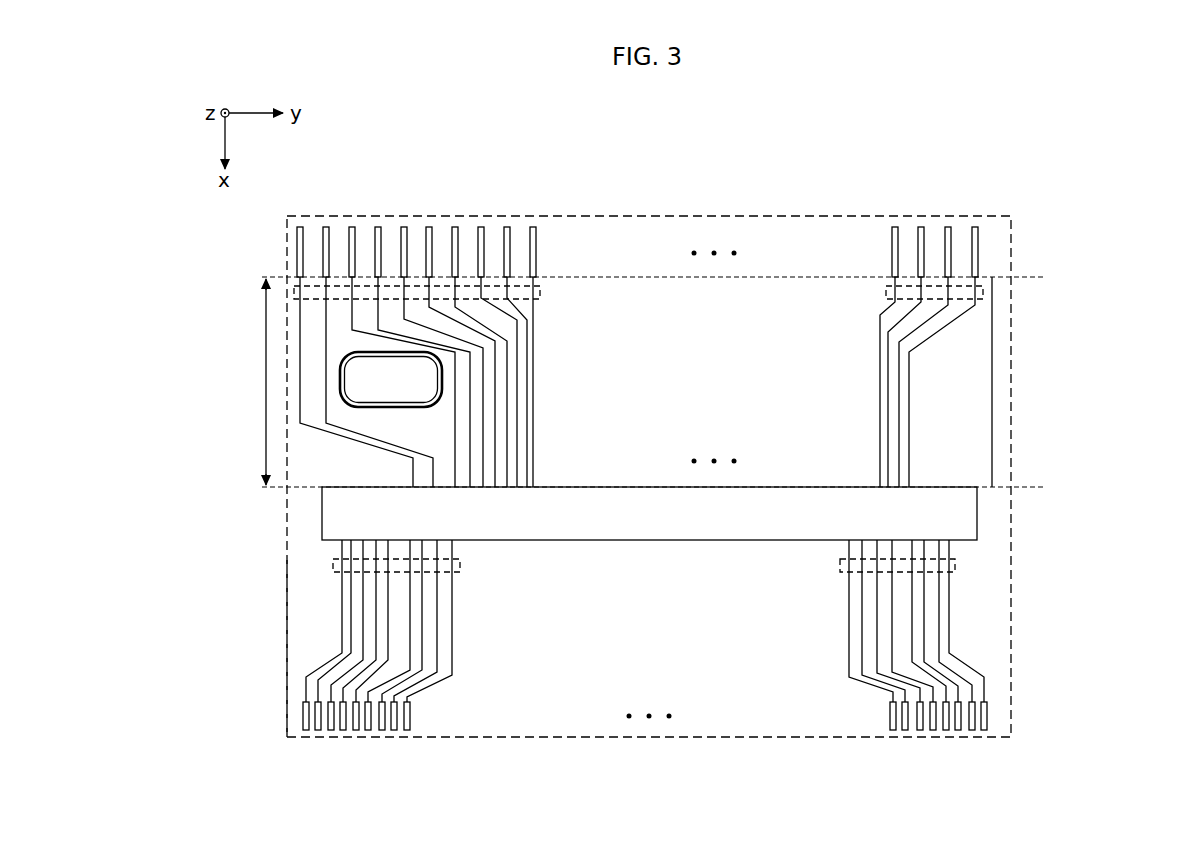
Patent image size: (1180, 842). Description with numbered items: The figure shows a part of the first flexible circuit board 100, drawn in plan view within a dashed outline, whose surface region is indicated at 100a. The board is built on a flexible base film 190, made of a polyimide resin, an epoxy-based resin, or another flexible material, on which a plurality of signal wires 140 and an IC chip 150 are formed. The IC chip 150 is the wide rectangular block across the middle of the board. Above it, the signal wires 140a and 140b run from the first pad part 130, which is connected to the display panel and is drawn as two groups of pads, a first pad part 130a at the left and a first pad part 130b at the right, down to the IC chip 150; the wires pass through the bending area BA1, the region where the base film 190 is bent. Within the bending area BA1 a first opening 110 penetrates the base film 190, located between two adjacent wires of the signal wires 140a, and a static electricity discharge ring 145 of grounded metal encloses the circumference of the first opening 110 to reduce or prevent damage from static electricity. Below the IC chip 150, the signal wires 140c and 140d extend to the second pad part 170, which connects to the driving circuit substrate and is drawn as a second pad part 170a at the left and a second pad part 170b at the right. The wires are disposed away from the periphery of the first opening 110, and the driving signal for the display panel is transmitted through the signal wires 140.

The first flexible circuit board 100 is at (718, 123).
The first surface of base film 100a is at (744, 214).
The first opening 110 is at (428, 357).
The first pad part 130 is at (1100, 186).
The first pad part 130a is at (540, 226).
The first pad part 130b is at (983, 226).
The signal wires 140 is at (1100, 335).
The signal wires 140a is at (294, 293).
The signal wires 140b is at (983, 296).
The signal wires 140c is at (333, 571).
The signal wires 140d is at (955, 572).
The static electricity discharge ring 145 is at (334, 373).
The IC chip 150 is at (322, 517).
The second pad part 170 is at (1100, 487).
The second pad part 170a is at (412, 732).
The second pad part 170b is at (990, 732).
The base film 190 is at (302, 612).
The bending area BA1 is at (246, 382).